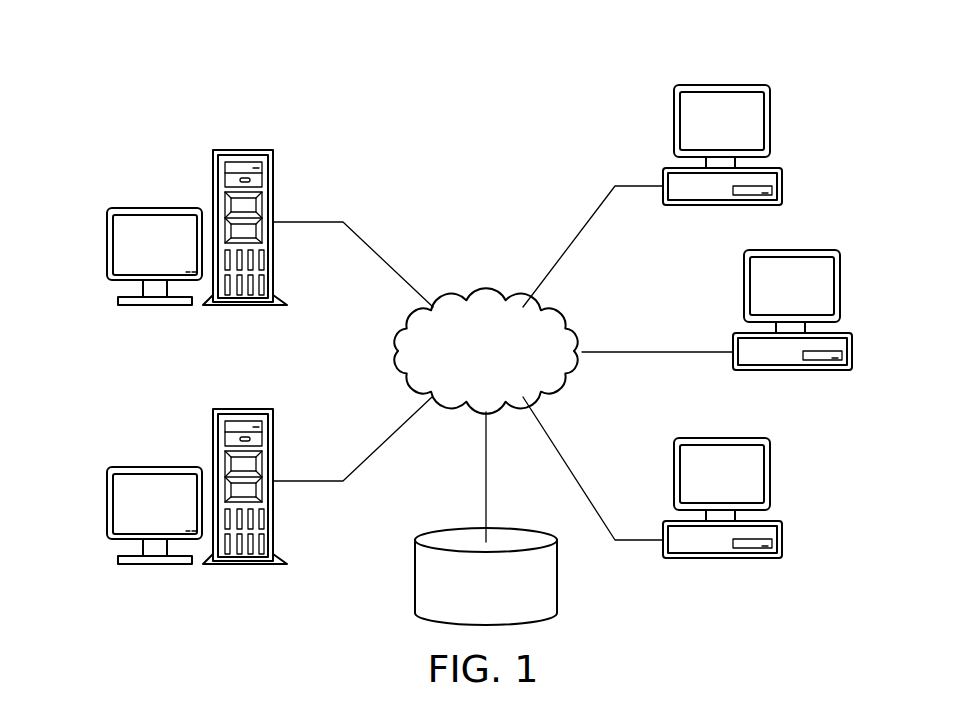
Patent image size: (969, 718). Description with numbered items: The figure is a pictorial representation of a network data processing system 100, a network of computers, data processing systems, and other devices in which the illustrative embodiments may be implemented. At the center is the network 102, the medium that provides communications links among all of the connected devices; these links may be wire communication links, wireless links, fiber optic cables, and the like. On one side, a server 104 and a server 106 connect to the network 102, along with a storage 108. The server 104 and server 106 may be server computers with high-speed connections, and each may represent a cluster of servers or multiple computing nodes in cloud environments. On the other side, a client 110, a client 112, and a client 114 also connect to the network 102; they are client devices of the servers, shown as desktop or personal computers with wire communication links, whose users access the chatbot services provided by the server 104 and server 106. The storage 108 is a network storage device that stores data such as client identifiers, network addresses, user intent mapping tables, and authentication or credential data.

The network data processing system 100 is at (348, 68).
The network 102 is at (460, 300).
The server 104 is at (107, 243).
The server 106 is at (107, 507).
The storage 108 is at (415, 577).
The client 110 is at (782, 178).
The client 112 is at (853, 360).
The client 114 is at (782, 548).